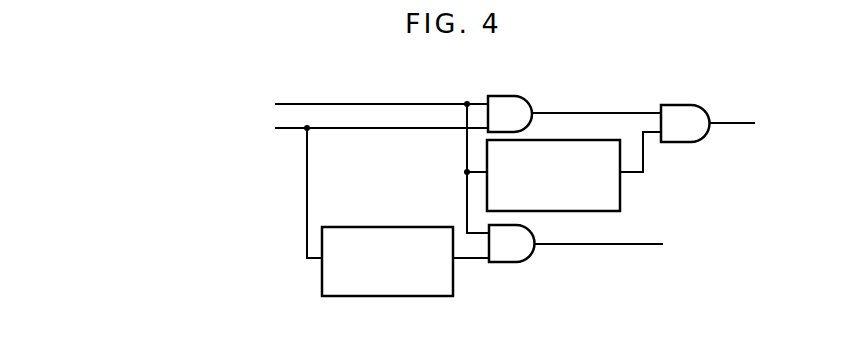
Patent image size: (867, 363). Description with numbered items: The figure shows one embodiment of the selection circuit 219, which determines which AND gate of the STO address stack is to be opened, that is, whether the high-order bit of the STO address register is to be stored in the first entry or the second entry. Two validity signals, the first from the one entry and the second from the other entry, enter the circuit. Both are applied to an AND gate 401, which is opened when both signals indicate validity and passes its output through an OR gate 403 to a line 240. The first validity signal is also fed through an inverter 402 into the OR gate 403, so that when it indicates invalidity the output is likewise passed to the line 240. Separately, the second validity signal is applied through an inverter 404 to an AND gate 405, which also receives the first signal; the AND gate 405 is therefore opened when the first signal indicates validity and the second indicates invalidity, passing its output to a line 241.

The selection circuit 219 is at (272, 195).
The AND gate 401 is at (509, 97).
The inverter 402 is at (621, 194).
The OR gate 403 is at (690, 105).
The inverter 404 is at (357, 227).
The AND gate 405 is at (526, 262).
The line 240 is at (742, 122).
The line 241 is at (634, 245).